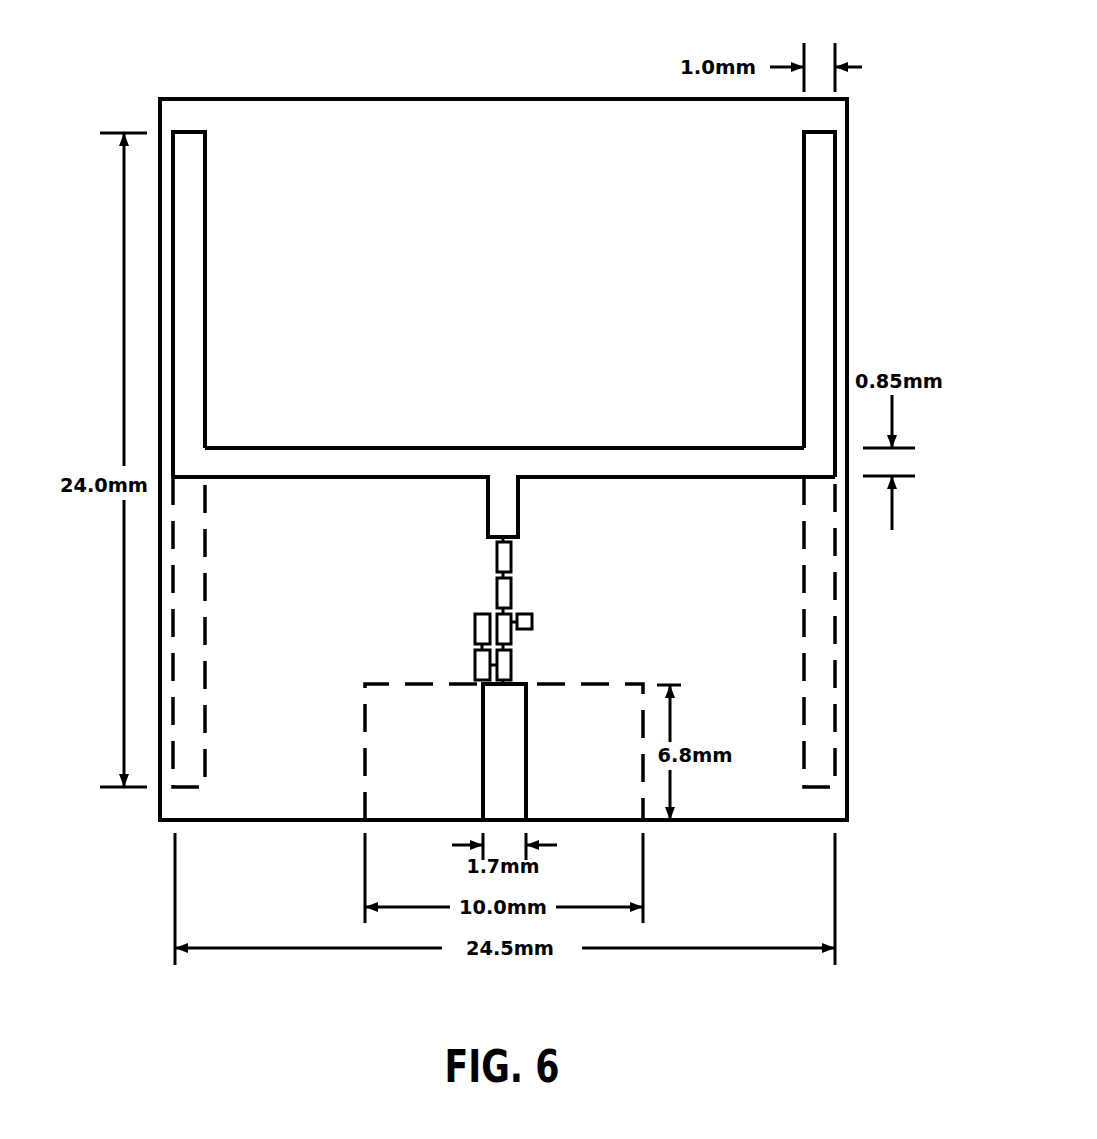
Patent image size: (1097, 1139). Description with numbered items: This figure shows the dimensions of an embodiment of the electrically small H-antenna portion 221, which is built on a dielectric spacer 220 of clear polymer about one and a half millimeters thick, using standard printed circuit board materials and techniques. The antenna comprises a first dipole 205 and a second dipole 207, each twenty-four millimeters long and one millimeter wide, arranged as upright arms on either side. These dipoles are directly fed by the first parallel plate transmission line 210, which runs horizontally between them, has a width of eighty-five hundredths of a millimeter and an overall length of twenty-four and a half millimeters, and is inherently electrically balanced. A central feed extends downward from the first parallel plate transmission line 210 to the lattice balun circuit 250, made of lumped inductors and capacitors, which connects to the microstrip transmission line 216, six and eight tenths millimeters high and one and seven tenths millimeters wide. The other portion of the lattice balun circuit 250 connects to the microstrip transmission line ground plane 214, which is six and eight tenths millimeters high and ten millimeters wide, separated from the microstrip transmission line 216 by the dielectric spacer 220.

The H-antenna portion 221 is at (470, 37).
The dielectric spacer 220 is at (308, 99).
The first dipole 205 is at (205, 277).
The second dipole 207 is at (804, 278).
The first parallel plate transmission line 210 is at (550, 445).
The lattice balun circuit 250 is at (552, 593).
The microstrip transmission line ground plane 214 is at (587, 682).
The microstrip transmission line 216 is at (483, 757).